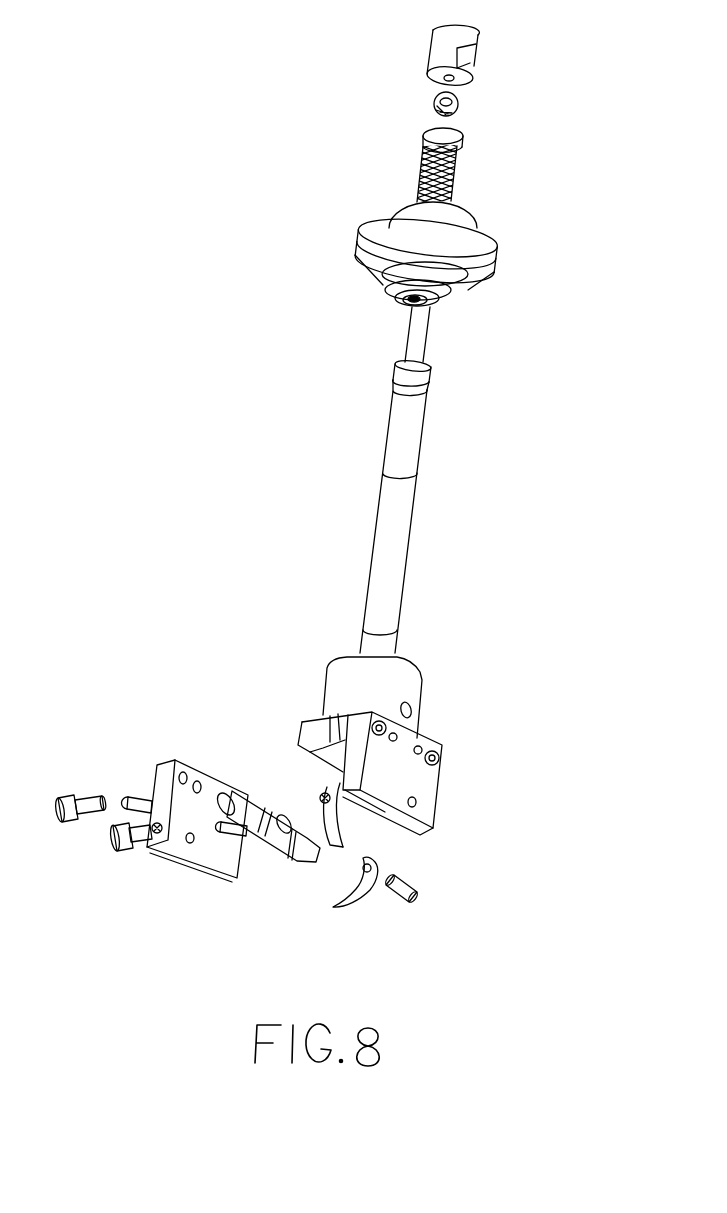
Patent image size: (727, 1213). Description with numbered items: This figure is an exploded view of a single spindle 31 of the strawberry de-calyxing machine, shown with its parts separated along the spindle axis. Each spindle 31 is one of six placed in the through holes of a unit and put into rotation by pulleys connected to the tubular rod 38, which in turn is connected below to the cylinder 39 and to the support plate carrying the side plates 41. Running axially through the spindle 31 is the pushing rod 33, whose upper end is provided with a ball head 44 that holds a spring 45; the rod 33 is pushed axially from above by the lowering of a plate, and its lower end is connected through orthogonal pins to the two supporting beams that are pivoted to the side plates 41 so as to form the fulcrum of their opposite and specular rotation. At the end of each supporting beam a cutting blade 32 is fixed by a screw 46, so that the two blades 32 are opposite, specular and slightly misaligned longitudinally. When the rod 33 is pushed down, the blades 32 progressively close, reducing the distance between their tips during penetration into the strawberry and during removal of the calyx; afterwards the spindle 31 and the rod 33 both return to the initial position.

The spindle 31 is at (273, 430).
The cutting blade 32 is at (358, 905).
The rod 33 is at (428, 333).
The tubular rod 38 is at (418, 457).
The cylinder 39 is at (414, 688).
The side plate 41 is at (445, 788).
The ball head 44 is at (474, 57).
The spring 45 is at (456, 168).
The screw 46 is at (416, 890).